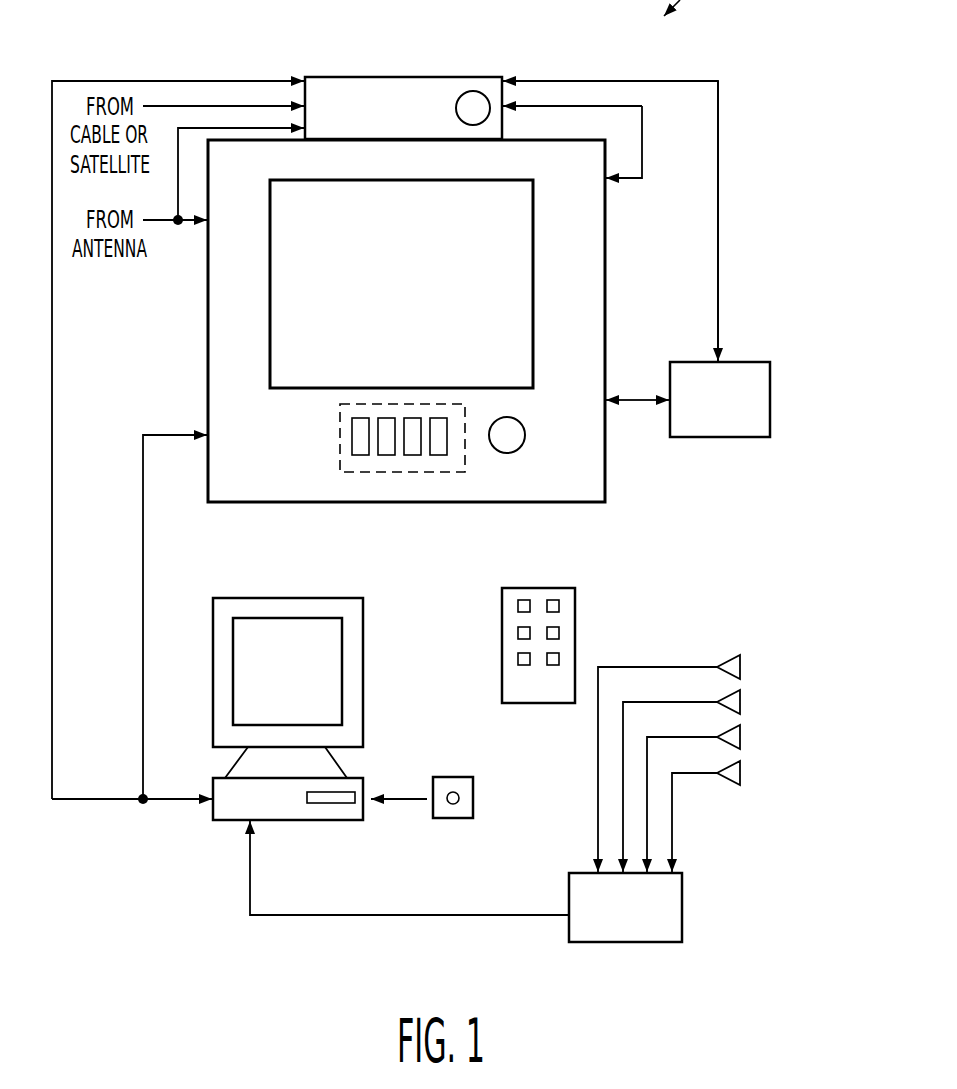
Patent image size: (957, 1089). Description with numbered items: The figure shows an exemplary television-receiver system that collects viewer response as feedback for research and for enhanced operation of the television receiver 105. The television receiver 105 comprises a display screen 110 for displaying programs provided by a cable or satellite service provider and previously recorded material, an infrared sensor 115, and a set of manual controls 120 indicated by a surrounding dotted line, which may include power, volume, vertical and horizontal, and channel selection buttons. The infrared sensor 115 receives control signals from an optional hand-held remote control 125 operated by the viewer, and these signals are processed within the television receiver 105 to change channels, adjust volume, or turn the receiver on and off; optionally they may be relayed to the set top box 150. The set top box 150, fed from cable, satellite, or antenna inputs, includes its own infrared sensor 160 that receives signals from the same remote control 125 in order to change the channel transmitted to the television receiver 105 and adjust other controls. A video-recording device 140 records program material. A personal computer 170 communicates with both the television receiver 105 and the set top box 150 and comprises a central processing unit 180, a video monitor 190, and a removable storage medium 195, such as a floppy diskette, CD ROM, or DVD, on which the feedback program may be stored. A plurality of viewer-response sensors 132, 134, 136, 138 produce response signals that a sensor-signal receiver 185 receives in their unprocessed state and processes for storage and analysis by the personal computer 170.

The television receiver 105 is at (605, 240).
The display screen 110 is at (533, 313).
The infrared (IR) sensor 115 is at (503, 453).
The manual controls 120 is at (390, 472).
The hand-held remote control 125 is at (502, 602).
The viewer-response sensor 132 is at (740, 667).
The viewer-response sensor 134 is at (740, 702).
The viewer-response sensor 136 is at (740, 737).
The viewer-response sensor 138 is at (740, 773).
The video-recording device 140 is at (757, 362).
The set top box 150 is at (355, 77).
The infrared (IR) sensor 160 is at (472, 90).
The personal computer (PC) 170 is at (315, 711).
The central processing unit (CPU) 180 is at (300, 820).
The sensor-signal receiver 185 is at (682, 912).
The video monitor 190 is at (363, 648).
The removable storage medium 195 is at (453, 777).